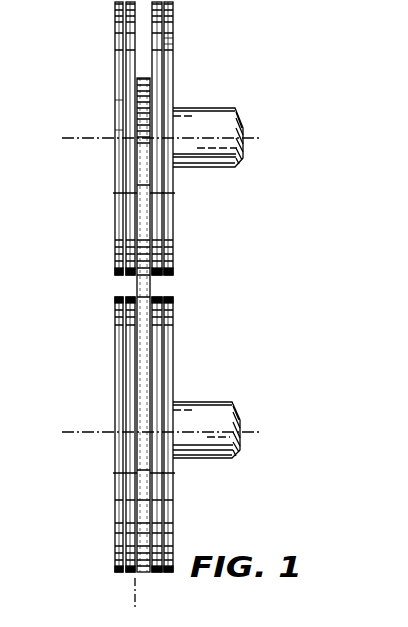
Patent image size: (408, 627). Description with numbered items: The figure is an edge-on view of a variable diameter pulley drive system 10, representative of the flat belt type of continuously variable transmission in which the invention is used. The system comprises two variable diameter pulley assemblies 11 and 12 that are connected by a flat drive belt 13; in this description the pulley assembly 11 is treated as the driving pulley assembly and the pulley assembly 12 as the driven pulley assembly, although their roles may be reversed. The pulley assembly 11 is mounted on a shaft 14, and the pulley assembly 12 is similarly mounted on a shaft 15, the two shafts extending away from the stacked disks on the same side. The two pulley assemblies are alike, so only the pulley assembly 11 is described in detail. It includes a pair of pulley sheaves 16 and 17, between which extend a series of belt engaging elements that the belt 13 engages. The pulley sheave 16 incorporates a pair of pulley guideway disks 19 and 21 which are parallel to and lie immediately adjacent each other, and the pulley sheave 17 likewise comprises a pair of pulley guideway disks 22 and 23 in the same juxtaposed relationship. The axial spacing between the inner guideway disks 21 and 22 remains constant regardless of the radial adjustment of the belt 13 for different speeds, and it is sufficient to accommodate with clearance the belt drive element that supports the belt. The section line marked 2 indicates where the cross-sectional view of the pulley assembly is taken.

The section line 2- 2 is at (162, 592).
The variable diameter pulley drive system 10 is at (265, 77).
The pulley assembly 11 is at (178, 60).
The pulley assembly 12 is at (185, 337).
The flat drive belt 13 is at (153, 280).
The shaft 14 is at (213, 168).
The shaft 15 is at (205, 401).
The pulley sheave 16 is at (177, 97).
The pulley sheave 17 is at (108, 123).
The pulley guideway disk 19 is at (172, 40).
The pulley guideway disk 21 is at (155, 14).
The pulley guideway disk 22 is at (133, 48).
The pulley guideway disk 23 is at (117, 88).